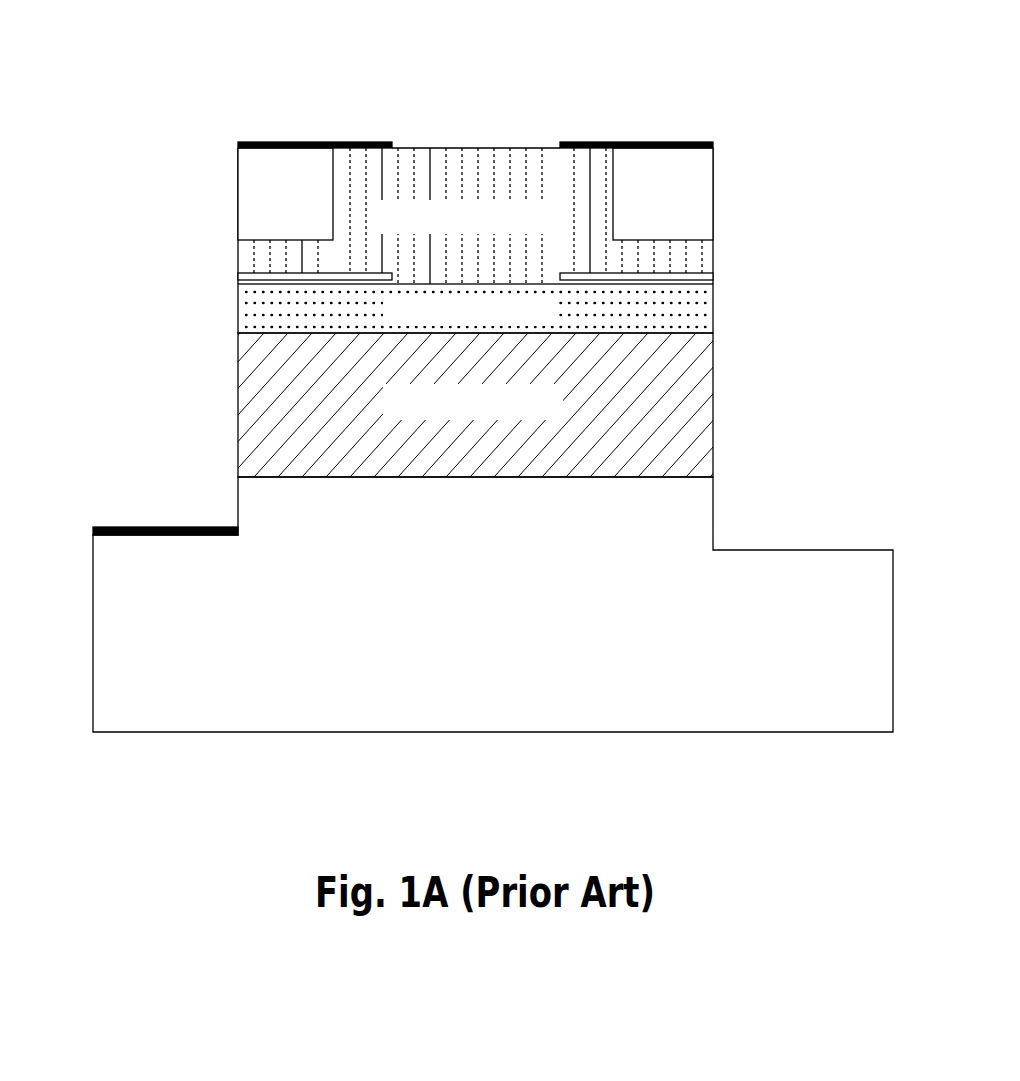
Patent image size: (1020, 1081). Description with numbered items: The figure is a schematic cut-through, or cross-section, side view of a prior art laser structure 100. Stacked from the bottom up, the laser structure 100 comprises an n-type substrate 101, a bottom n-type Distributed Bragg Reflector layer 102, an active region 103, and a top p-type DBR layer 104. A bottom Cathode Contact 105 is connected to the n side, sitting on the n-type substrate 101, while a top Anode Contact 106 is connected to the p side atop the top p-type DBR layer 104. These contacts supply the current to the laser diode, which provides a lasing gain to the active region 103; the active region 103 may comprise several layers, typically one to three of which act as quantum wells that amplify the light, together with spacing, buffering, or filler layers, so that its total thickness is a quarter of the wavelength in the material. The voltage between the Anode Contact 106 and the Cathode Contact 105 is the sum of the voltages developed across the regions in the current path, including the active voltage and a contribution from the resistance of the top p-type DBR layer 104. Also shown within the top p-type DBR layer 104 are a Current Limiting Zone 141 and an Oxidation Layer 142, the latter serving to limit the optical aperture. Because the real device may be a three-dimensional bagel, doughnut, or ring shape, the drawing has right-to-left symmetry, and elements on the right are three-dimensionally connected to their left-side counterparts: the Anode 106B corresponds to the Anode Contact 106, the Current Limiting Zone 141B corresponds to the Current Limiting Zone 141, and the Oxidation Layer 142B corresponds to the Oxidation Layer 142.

The laser structure 100 is at (793, 782).
The n-type substrate 101 is at (493, 604).
The bottom n-type Distributed Bragg Reflector (DBR) layer 102 is at (475, 405).
The active region 103 is at (475, 308).
The top p-type DBR layer 104 is at (475, 216).
The Cathode Contact 105 is at (159, 522).
The Anode Contact 106 is at (348, 130).
The Anode 106B is at (596, 130).
The Current Limiting Zone 141 is at (285, 194).
The Current Limiting Zone 141B is at (663, 194).
The Oxidation Layer 142 is at (228, 270).
The Oxidation Layer 142B is at (724, 270).